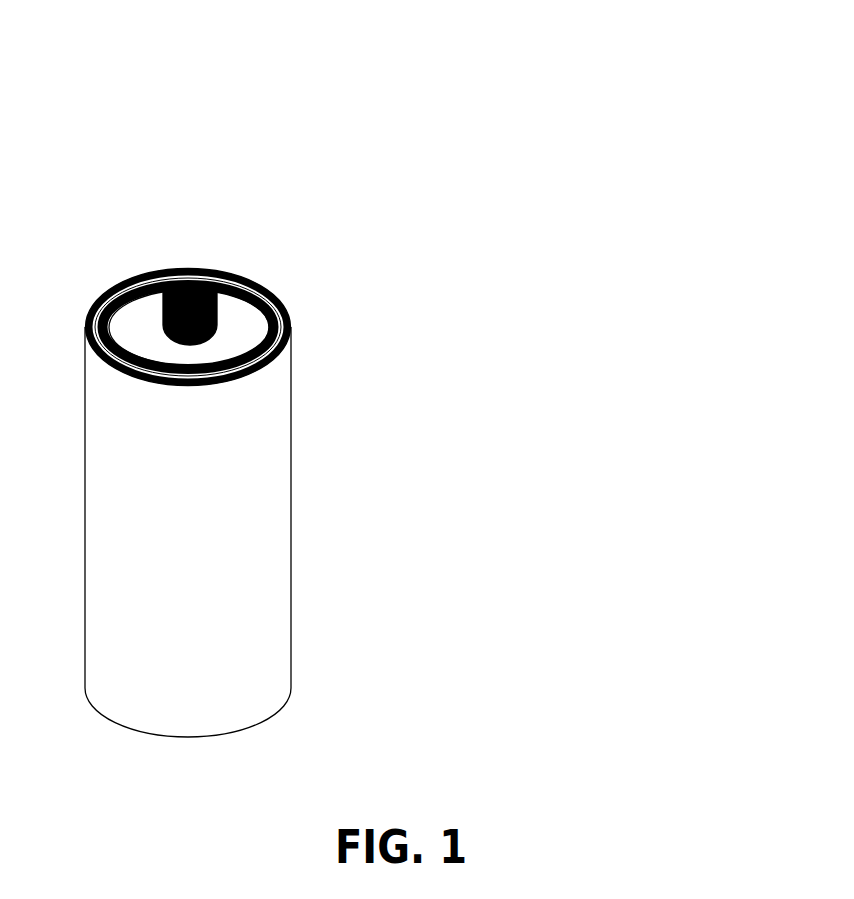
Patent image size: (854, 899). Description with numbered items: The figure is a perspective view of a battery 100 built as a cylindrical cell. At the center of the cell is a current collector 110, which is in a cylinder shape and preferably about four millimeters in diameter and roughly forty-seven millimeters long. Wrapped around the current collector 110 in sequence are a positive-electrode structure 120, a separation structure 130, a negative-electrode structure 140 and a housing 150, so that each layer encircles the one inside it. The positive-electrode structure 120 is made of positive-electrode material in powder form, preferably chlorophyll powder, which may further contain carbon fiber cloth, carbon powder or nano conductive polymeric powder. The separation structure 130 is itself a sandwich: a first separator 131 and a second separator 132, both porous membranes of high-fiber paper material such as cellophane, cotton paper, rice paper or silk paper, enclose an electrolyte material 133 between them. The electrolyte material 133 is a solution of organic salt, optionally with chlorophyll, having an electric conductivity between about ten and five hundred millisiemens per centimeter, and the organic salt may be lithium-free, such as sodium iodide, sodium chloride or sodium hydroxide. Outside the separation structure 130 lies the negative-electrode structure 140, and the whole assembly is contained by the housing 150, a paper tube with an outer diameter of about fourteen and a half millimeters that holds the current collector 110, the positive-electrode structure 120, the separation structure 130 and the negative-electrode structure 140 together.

The battery 100 is at (300, 93).
The current collector 110 is at (429, 228).
The positive-electrode structure 120 is at (402, 292).
The separation structure 130 is at (700, 408).
The first separator 131 is at (392, 347).
The second separator 132 is at (395, 379).
The electrolyte material 133 is at (400, 401).
The negative-electrode structure 140 is at (391, 462).
The housing 150 is at (390, 540).